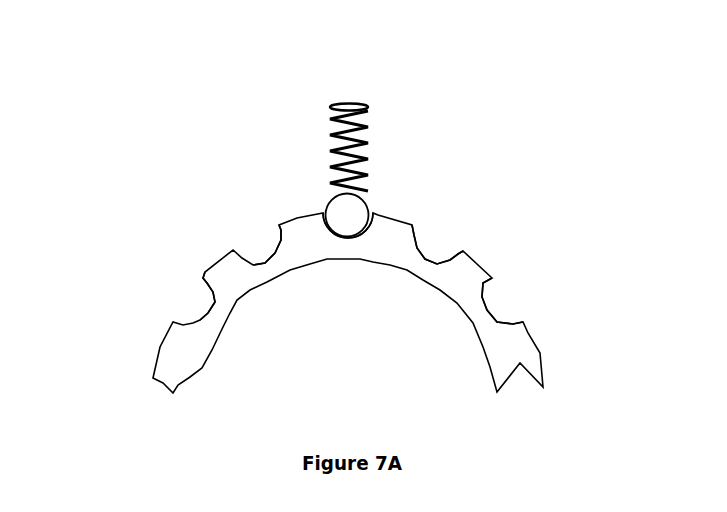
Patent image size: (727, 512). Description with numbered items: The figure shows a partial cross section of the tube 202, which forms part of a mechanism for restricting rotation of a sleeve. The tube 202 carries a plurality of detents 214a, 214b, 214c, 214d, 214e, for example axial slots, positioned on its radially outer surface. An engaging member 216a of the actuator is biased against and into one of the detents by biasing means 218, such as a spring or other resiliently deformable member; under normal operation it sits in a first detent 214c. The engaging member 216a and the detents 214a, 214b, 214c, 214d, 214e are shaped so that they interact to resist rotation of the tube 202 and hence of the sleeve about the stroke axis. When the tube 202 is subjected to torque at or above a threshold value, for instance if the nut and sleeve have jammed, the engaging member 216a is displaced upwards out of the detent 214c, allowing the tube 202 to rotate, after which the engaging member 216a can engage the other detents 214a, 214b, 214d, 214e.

The tube 202 is at (180, 372).
The detent 214a is at (203, 318).
The detent 214b is at (266, 260).
The detent 214c is at (348, 240).
The detent 214d is at (438, 262).
The detent 214e is at (497, 320).
The engaging member 216a is at (350, 205).
The biasing means 218 is at (345, 112).